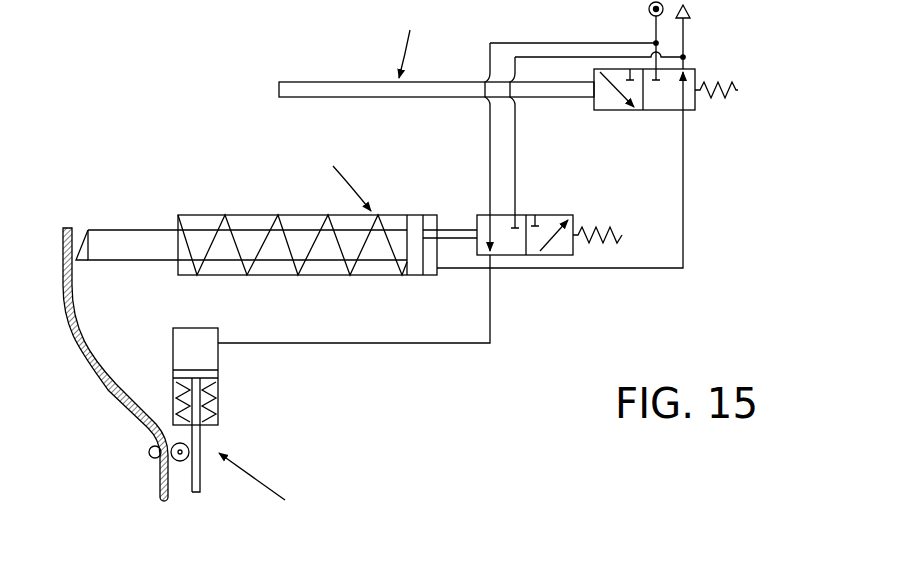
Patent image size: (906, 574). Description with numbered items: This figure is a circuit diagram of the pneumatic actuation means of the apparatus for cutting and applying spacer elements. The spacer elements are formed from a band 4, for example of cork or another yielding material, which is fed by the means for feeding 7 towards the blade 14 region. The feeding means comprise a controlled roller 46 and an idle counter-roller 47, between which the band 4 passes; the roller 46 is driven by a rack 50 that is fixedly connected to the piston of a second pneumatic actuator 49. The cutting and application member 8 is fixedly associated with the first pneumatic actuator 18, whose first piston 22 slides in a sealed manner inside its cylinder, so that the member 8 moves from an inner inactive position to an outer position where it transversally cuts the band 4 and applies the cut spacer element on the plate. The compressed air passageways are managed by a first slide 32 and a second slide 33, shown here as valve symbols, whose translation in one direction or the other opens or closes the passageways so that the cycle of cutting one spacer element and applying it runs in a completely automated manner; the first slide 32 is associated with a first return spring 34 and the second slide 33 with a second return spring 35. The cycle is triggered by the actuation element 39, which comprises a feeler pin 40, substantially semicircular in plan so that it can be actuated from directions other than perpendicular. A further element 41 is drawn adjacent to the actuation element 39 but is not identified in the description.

The band 4 is at (90, 368).
The means for feeding 7 is at (258, 485).
The cutting and application member 8 is at (120, 246).
The blade 14 is at (83, 260).
The first pneumatic actuator 18 is at (292, 208).
The first piston 22 is at (413, 242).
The first slide 32 is at (650, 112).
The second slide 33 is at (533, 258).
The first return spring 34 is at (737, 86).
The second return spring 35 is at (623, 233).
The actuation element 39 is at (406, 41).
The feeler pin 40 is at (283, 88).
The sensor element 41 is at (314, 4).
The controlled roller 46 is at (178, 464).
The idle counter-roller 47 is at (148, 456).
The second pneumatic actuator 49 is at (218, 357).
The rack 50 is at (196, 482).